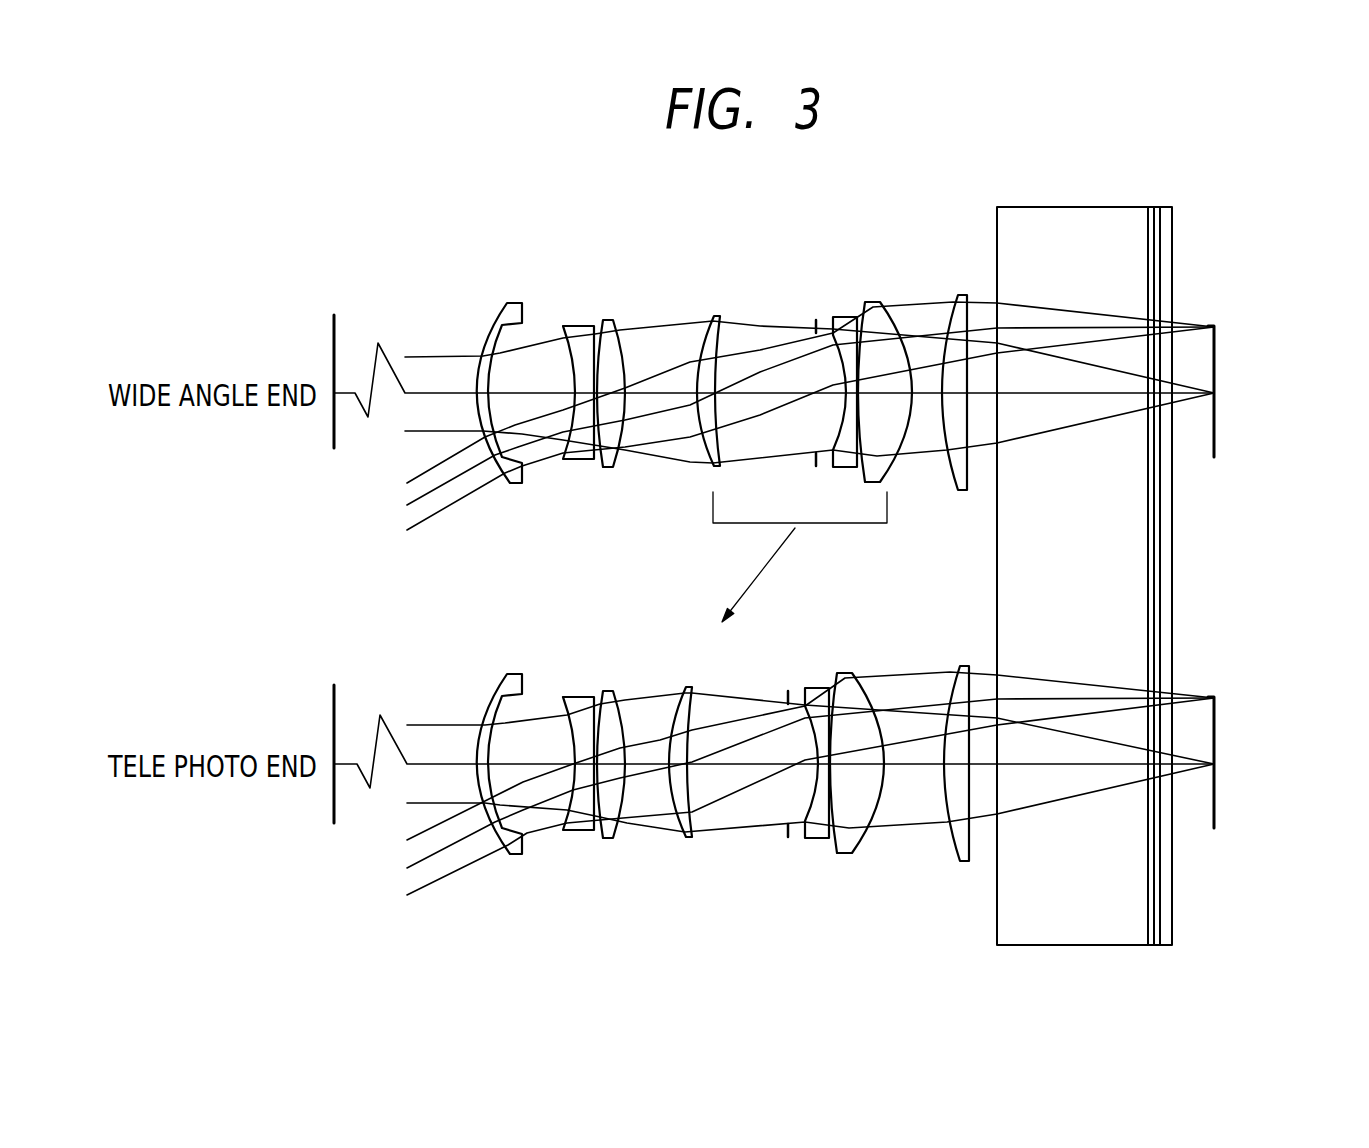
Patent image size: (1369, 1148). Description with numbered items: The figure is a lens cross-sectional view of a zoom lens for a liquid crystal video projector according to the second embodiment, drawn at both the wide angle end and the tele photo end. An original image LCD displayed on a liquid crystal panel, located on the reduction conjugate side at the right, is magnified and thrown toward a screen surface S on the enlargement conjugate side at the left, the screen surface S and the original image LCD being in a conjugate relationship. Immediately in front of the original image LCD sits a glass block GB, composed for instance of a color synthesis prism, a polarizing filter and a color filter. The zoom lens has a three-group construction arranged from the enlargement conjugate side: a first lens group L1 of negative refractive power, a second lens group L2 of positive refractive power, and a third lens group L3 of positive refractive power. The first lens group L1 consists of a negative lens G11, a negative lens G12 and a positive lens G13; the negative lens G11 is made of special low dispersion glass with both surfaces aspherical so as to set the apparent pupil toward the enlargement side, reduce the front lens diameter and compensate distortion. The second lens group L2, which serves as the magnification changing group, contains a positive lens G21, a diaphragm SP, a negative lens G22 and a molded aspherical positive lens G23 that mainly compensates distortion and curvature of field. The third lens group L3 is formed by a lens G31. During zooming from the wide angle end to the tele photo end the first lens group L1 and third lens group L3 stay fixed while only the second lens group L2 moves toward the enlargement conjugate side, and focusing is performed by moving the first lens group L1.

The screen surface S is at (332, 333).
The first lens group L1 is at (618, 235).
The second lens group L2 is at (932, 235).
The third lens group L3 is at (987, 235).
The negative lens G11 is at (500, 345).
The negative lens G12 is at (577, 335).
The positive lens G13 is at (607, 330).
The positive lens G21 is at (717, 318).
The negative lens G22 is at (843, 322).
The positive lens G23 is at (870, 312).
The lens of third lens group G31 is at (963, 300).
The diaphragm SP is at (812, 460).
The glass block GB is at (1150, 575).
The original image on liquid crystal panel LCD is at (1226, 360).